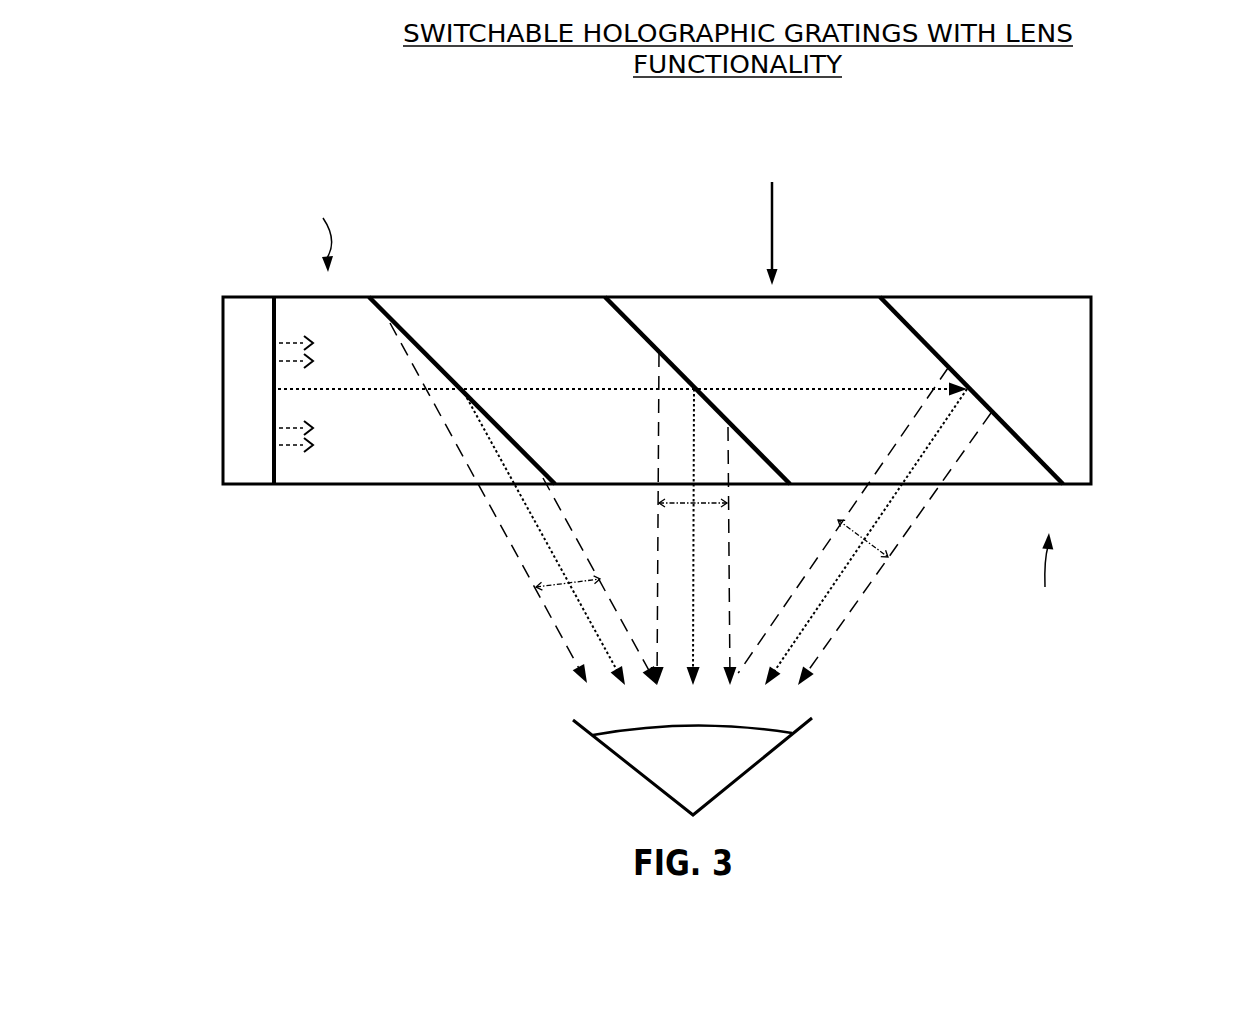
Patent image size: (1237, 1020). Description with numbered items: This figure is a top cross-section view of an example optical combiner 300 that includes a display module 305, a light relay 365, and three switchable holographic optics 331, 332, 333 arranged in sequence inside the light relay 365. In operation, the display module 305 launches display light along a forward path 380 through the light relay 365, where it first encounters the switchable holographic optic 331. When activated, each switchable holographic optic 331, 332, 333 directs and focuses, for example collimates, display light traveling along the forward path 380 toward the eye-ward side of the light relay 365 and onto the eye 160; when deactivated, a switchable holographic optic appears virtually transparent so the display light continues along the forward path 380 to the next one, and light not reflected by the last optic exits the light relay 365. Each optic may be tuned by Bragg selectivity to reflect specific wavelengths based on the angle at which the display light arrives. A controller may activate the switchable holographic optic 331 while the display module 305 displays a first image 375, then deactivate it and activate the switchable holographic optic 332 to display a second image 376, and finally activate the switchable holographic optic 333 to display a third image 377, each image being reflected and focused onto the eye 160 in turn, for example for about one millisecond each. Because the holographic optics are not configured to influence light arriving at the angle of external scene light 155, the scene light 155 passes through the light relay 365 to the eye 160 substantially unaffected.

The optical combiner 300 is at (1190, 122).
The display module 305 is at (242, 297).
The external scene light 155 is at (774, 205).
The switchable holographic optic 331 is at (413, 340).
The switchable holographic optic 332 is at (644, 334).
The switchable holographic optic 333 is at (905, 318).
The light relay 365 is at (1035, 297).
The forward path 380 is at (405, 392).
The first image 375 is at (550, 593).
The second image 376 is at (688, 505).
The third image 377 is at (867, 547).
The eye 160 is at (709, 783).